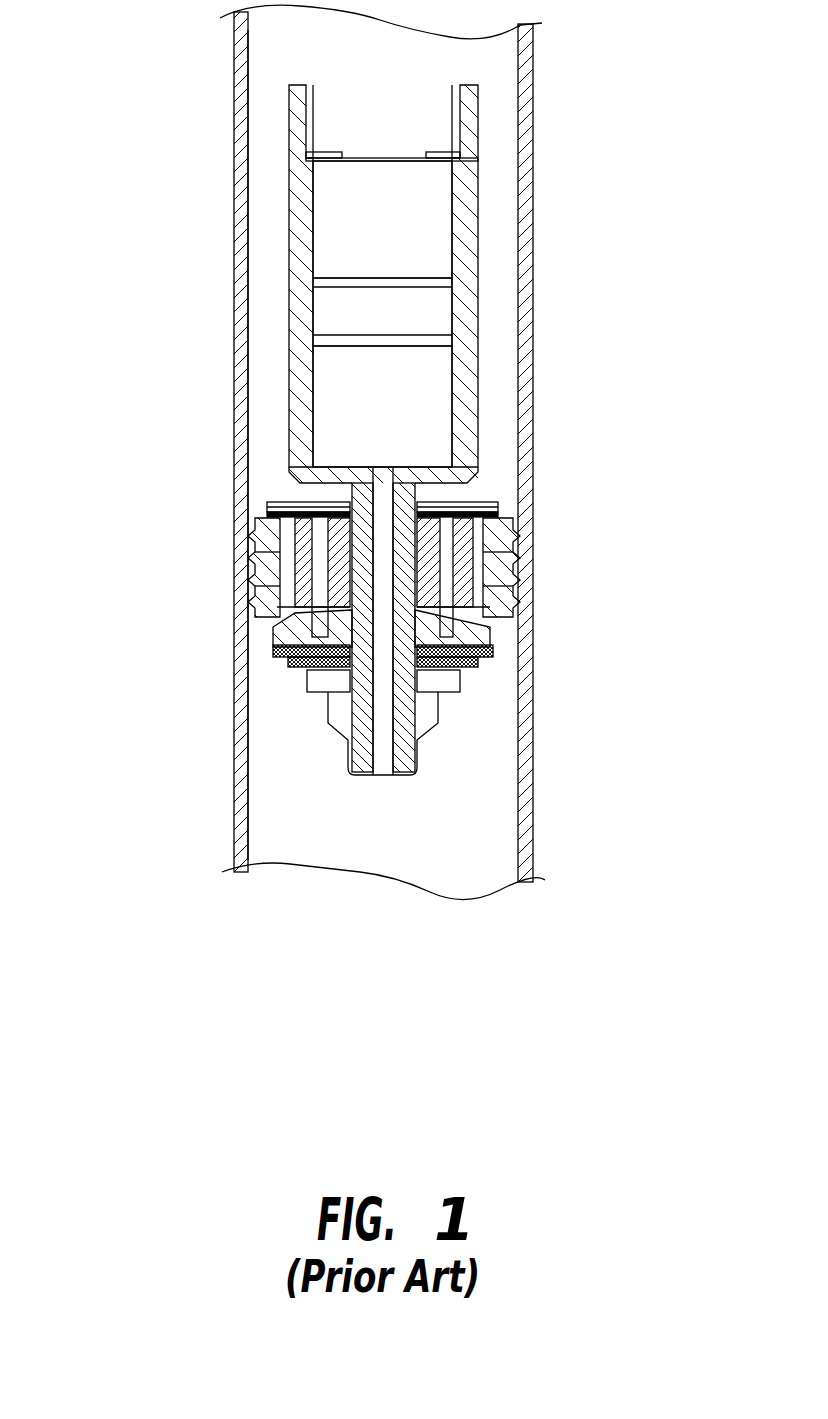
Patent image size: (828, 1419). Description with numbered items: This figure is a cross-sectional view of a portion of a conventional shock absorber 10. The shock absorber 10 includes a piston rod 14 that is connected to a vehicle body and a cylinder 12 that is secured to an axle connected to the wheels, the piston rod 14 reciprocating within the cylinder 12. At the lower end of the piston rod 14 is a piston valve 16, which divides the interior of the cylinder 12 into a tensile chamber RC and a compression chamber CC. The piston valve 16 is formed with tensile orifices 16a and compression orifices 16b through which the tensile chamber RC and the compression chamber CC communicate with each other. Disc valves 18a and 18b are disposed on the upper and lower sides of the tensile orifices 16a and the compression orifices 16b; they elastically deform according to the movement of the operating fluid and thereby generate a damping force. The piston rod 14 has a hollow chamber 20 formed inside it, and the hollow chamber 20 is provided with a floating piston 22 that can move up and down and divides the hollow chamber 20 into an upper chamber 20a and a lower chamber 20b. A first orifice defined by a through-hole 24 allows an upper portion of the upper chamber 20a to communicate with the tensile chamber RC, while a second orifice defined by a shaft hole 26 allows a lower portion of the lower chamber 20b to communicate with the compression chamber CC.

The shock absorber 10 is at (560, 62).
The cylinder 12 is at (533, 108).
The piston rod 14 is at (491, 223).
The piston valve 16 is at (510, 526).
The tensile orifices 16a is at (515, 588).
The compression orifices 16b is at (515, 562).
The disc valve 18a is at (478, 664).
The disc valve 18b is at (478, 494).
The hollow chamber 20 is at (133, 253).
The upper chamber 20a is at (339, 246).
The lower chamber 20b is at (339, 371).
The floating piston 22 is at (440, 315).
The through-hole 24 is at (480, 160).
The shaft hole 26 is at (387, 733).
The tensile chamber RC is at (266, 126).
The compression chamber CC is at (283, 770).